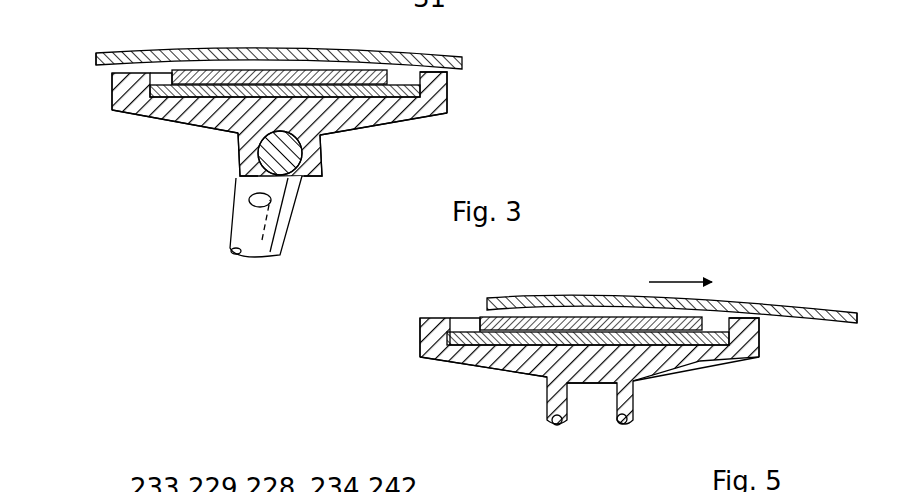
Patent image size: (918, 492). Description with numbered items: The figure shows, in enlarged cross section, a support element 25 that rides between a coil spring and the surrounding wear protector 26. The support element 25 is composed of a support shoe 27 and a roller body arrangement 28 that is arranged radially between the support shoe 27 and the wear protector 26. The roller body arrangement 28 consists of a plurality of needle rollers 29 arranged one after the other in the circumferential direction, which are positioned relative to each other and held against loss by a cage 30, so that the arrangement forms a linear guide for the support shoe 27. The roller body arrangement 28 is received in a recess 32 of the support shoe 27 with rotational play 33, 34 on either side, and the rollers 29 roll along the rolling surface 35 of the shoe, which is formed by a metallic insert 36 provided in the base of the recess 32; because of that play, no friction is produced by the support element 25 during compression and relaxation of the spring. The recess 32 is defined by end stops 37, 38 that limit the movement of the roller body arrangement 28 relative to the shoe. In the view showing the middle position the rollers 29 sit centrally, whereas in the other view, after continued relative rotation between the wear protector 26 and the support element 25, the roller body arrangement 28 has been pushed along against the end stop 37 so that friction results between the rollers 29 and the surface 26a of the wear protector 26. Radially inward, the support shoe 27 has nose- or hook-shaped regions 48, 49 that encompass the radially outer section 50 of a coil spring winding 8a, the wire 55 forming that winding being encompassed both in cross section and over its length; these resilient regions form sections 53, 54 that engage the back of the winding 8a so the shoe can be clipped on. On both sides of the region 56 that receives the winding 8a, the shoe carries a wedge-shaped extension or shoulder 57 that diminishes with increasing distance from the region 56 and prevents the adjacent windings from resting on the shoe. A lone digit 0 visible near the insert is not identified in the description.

In FIG. 3, the coil spring winding 8a is at (252, 228).
In FIG. 3, the layer 0 is at (282, 90).
In FIG. 3, the support element 25 is at (118, 124).
In FIG. 5, the support element 25 is at (507, 378).
In FIG. 3, the wear protector 26 is at (453, 53).
In FIG. 5, the wear protector 26 is at (807, 315).
In FIG. 5, the surface of the wear protector 26a is at (852, 323).
In FIG. 3, the support shoe 27 is at (340, 122).
In FIG. 5, the support shoe 27 is at (480, 367).
In FIG. 3, the roller body arrangement 28 is at (407, 123).
In FIG. 3, the needle rollers 29 is at (367, 67).
In FIG. 5, the needle rollers 29 is at (547, 312).
In FIG. 3, the cage 30 is at (177, 52).
In FIG. 3, the recess 32 is at (112, 100).
In FIG. 5, the recess 32 is at (457, 330).
In FIG. 3, the rotational play 33 is at (112, 84).
In FIG. 3, the rotational play 34 is at (410, 80).
In FIG. 3, the rolling surface 35 is at (167, 117).
In FIG. 3, the metallic insert 36 is at (225, 90).
In FIG. 5, the end stop 37 is at (749, 330).
In FIG. 5, the end stop 38 is at (420, 328).
In FIG. 3, the nose-shaped region 48 is at (247, 178).
In FIG. 3, the nose-shaped region 49 is at (318, 157).
In FIG. 3, the radially outer section of the coil spring winding 50 is at (257, 157).
In FIG. 5, the section engaging the back of the winding 53 is at (555, 418).
In FIG. 5, the section engaging the back of the winding 54 is at (629, 423).
In FIG. 3, the wire 55 is at (240, 250).
In FIG. 5, the region receiving the spring winding 56 is at (592, 368).
In FIG. 5, the extension or shoulder 57 is at (467, 358).